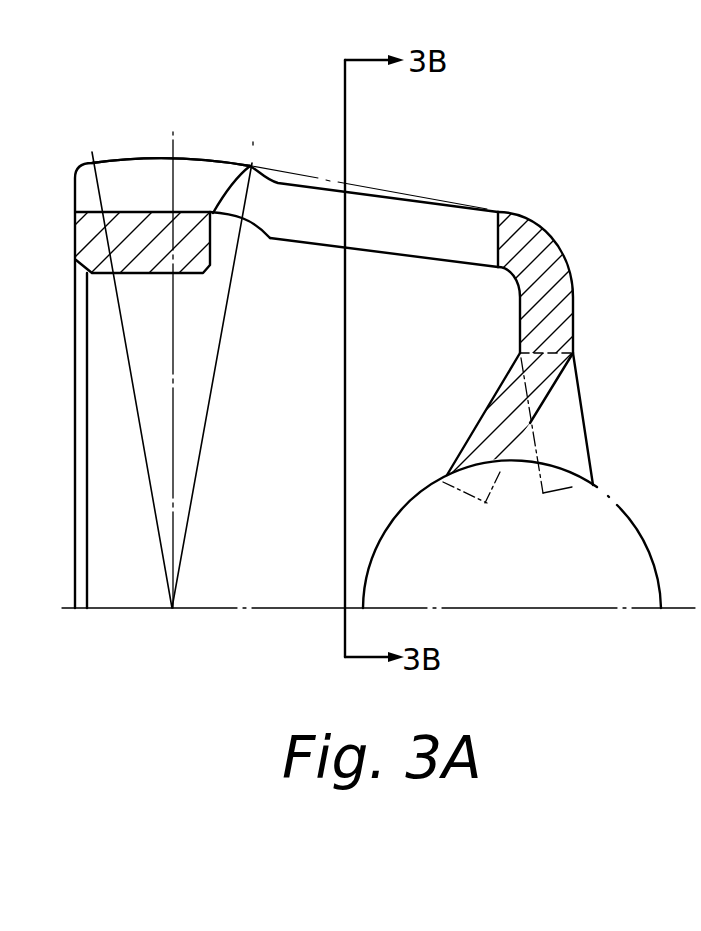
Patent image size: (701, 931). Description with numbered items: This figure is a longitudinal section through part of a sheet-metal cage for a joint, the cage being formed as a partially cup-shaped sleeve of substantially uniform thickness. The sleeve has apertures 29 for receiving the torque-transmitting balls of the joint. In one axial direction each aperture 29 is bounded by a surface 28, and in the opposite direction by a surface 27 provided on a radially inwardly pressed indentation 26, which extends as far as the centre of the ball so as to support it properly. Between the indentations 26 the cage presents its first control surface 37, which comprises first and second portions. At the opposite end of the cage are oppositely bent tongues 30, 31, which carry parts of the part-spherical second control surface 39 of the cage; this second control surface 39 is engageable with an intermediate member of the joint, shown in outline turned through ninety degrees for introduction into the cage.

The radially inwardly pressed indentation 26 is at (185, 220).
The surface 27 is at (210, 248).
The surface 28 is at (497, 225).
The aperture 29 is at (394, 212).
The tongue 30 is at (488, 450).
The tongue 31 is at (567, 453).
The first control surface 37 is at (113, 161).
The second control surface 39 is at (570, 488).